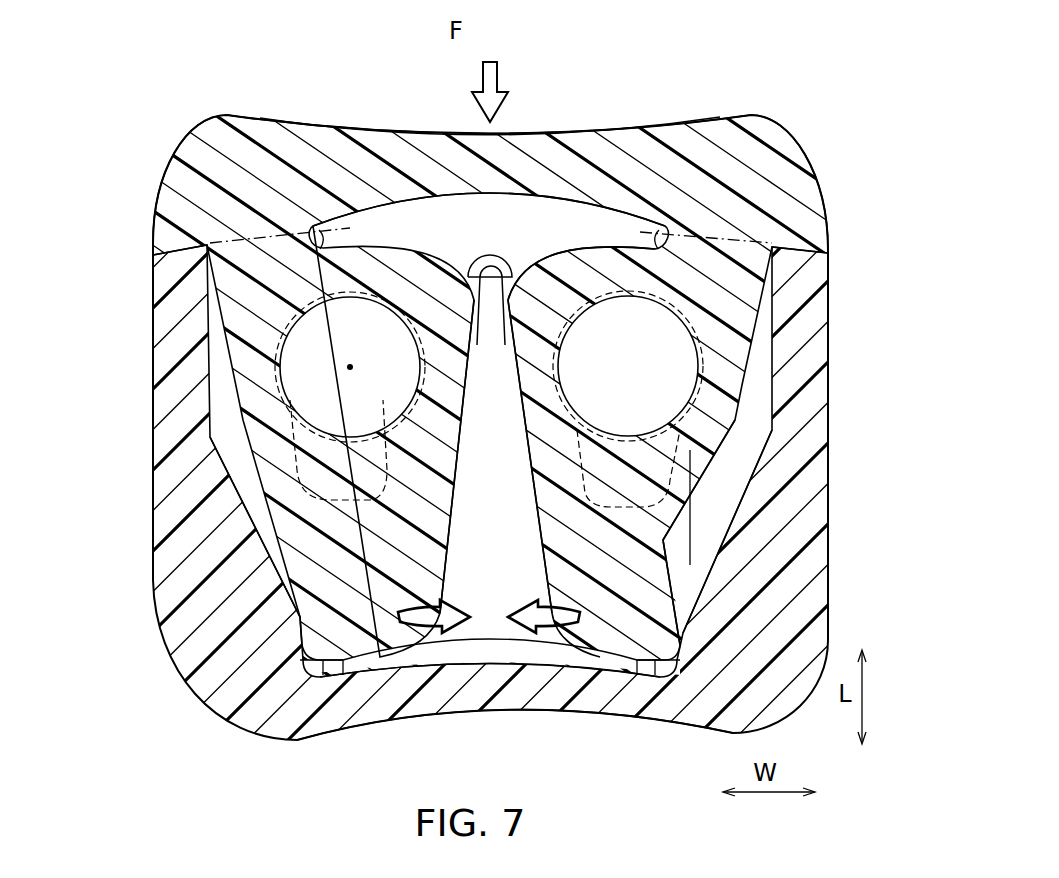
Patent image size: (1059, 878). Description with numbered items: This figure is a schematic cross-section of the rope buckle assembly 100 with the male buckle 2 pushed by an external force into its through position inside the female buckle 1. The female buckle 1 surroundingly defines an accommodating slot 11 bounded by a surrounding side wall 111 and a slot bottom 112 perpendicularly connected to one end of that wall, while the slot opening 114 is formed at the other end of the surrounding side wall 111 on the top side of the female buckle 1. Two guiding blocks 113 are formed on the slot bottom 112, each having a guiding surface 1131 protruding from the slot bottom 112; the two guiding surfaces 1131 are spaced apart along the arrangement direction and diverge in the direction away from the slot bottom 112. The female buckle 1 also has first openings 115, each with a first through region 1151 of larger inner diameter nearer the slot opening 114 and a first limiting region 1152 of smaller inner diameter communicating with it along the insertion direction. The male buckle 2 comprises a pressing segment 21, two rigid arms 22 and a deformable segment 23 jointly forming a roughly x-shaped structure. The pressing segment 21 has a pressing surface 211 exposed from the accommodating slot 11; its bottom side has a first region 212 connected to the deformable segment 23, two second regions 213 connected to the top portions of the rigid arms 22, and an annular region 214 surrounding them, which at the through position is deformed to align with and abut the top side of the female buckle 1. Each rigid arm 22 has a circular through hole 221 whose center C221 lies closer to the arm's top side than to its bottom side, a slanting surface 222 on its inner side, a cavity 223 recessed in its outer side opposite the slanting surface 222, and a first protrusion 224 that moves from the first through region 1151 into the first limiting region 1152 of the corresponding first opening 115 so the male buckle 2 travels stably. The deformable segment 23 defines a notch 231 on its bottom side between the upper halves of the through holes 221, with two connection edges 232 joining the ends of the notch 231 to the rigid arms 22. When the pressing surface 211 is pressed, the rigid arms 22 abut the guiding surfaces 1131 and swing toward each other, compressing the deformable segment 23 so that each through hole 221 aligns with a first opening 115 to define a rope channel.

The rope buckle assembly 100 is at (779, 50).
The female buckle 1 is at (163, 330).
The accommodating slot 11 is at (490, 630).
The surrounding side wall 111 is at (840, 384).
The slot bottom 112 is at (586, 730).
The guiding block 113 is at (306, 616).
The guiding surface 1131 is at (372, 660).
The slot opening 114 is at (196, 254).
The first opening 115 is at (62, 394).
The first through region 1151 is at (268, 382).
The first limiting region 1152 is at (310, 500).
The male buckle 2 is at (175, 136).
The pressing segment 21 is at (818, 196).
The pressing surface 211 is at (272, 110).
The first region 212 is at (566, 208).
The second region 213 is at (748, 228).
The annular region 214 is at (796, 262).
The rigid arm 22 is at (312, 521).
The through hole 221 is at (690, 362).
The center of the through hole C221 is at (350, 367).
The slanting surface 222 is at (508, 482).
The cavity 223 is at (680, 526).
The first protrusion 224 is at (708, 497).
The deformable segment 23 is at (433, 235).
The notch 231 is at (490, 300).
The connection edge 232 is at (592, 225).